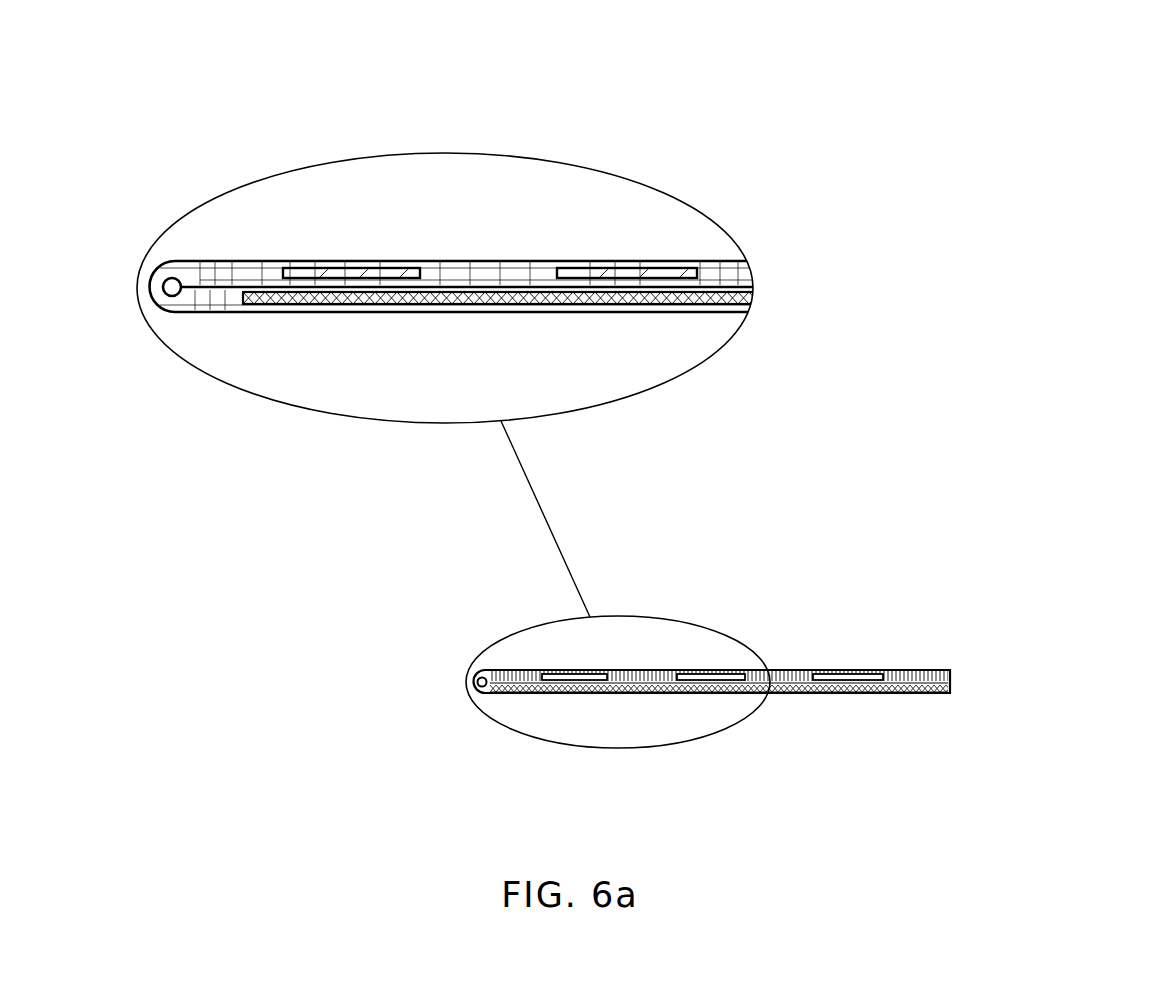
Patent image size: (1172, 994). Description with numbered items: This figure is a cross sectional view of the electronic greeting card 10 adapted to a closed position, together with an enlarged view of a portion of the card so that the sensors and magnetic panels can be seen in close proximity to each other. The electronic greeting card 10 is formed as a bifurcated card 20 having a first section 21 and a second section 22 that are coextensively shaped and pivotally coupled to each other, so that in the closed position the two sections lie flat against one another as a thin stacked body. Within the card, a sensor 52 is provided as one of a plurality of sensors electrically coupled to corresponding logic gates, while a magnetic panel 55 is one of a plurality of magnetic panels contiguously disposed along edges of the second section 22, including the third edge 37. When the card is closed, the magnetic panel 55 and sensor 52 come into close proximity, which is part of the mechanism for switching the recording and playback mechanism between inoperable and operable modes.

The electronic greeting card 10 is at (1047, 148).
The bifurcated card 20 is at (918, 668).
The first section 21 is at (478, 270).
The second section 22 is at (210, 300).
The third edge 37 is at (852, 694).
The sensor 52 is at (390, 270).
The magnetic panel 55 is at (405, 305).